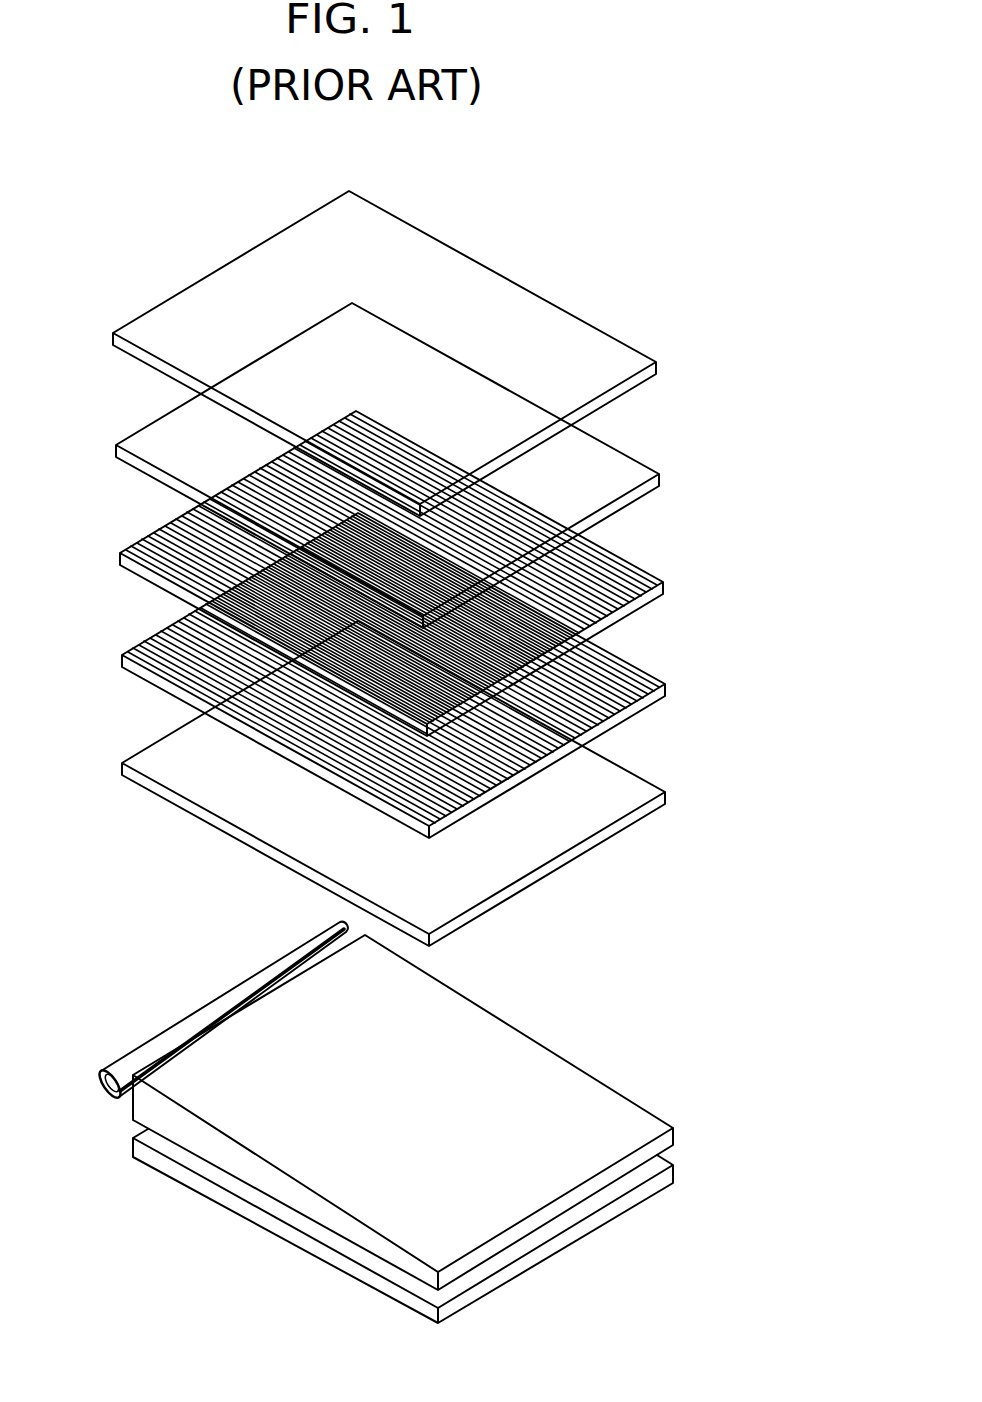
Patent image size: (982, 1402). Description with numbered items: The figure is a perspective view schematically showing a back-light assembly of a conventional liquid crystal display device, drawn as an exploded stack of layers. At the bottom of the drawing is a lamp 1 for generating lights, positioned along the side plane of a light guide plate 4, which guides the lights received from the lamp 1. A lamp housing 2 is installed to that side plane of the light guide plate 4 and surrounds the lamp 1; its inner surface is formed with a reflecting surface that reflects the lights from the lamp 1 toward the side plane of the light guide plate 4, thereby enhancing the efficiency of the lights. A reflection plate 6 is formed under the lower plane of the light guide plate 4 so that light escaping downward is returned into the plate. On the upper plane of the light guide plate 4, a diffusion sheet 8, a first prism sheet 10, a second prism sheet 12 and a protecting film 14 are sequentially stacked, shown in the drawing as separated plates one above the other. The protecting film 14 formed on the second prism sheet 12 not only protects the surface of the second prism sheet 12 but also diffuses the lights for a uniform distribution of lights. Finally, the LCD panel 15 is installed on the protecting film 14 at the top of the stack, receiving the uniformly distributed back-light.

The lamp 1 is at (103, 1093).
The lamp housing 2 is at (100, 1070).
The light guide plate 4 is at (505, 1050).
The reflection plate 6 is at (265, 1222).
The diffusion sheet 8 is at (667, 795).
The first prism sheet 10 is at (667, 688).
The second prism sheet 12 is at (665, 584).
The protecting film 14 is at (661, 476).
The LCD panel 15 is at (659, 364).